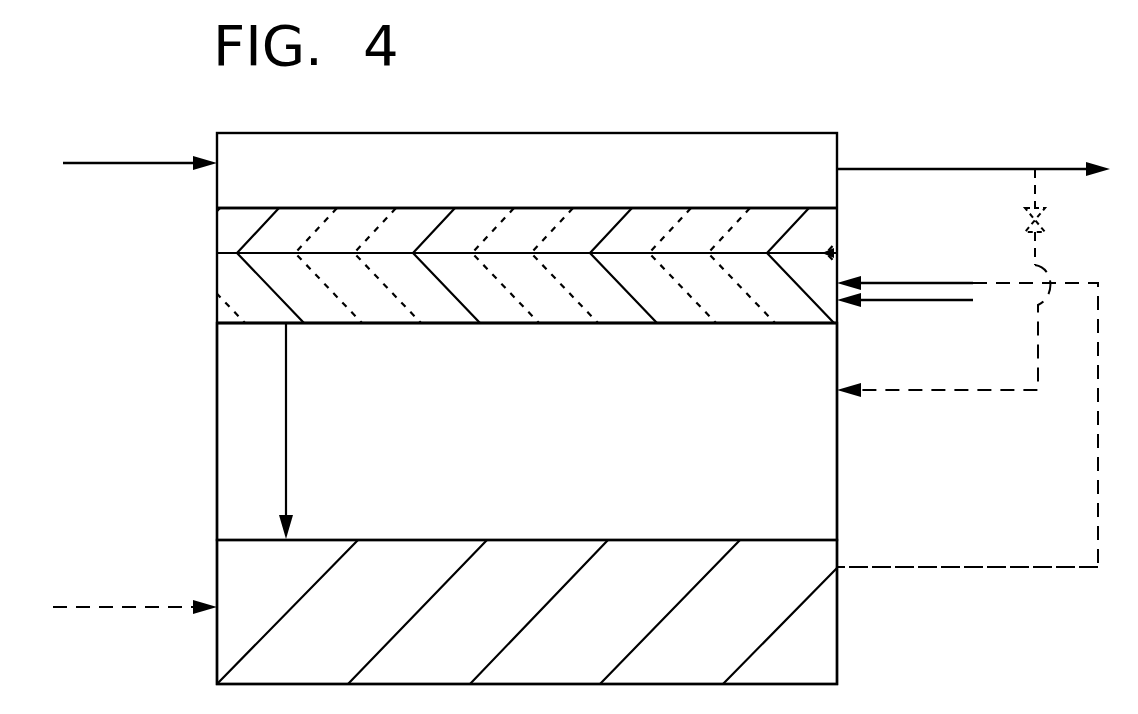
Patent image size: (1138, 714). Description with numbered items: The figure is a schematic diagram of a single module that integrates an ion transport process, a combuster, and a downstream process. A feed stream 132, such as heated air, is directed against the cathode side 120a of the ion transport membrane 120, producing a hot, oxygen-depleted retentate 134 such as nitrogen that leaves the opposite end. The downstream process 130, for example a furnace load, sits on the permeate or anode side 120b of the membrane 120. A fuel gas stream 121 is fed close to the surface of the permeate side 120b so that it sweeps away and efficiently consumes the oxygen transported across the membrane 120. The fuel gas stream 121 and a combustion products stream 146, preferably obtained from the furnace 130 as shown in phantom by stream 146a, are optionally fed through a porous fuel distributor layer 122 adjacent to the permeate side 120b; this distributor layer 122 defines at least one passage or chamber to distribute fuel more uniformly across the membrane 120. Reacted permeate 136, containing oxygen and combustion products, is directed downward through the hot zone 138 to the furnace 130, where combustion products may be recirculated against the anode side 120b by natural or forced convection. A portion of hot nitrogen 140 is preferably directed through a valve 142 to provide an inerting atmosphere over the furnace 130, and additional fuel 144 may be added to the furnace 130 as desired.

The ion transport membrane 120 is at (838, 222).
The cathode side 120a is at (527, 207).
The permeate side 120b is at (266, 254).
The fuel gas stream 121 is at (940, 301).
The porous fuel distributor layer 122 is at (838, 262).
The downstream process 130 is at (840, 590).
The feed stream 132 is at (97, 160).
The retentate 134 is at (978, 168).
The reacted permeate 136 is at (287, 413).
The hot zone 138 is at (680, 432).
The hot nitrogen 140 is at (893, 392).
The valve 142 is at (1046, 220).
The additional fuel 144 is at (118, 607).
The combustion products stream 146 is at (930, 282).
The stream 146a is at (1053, 567).